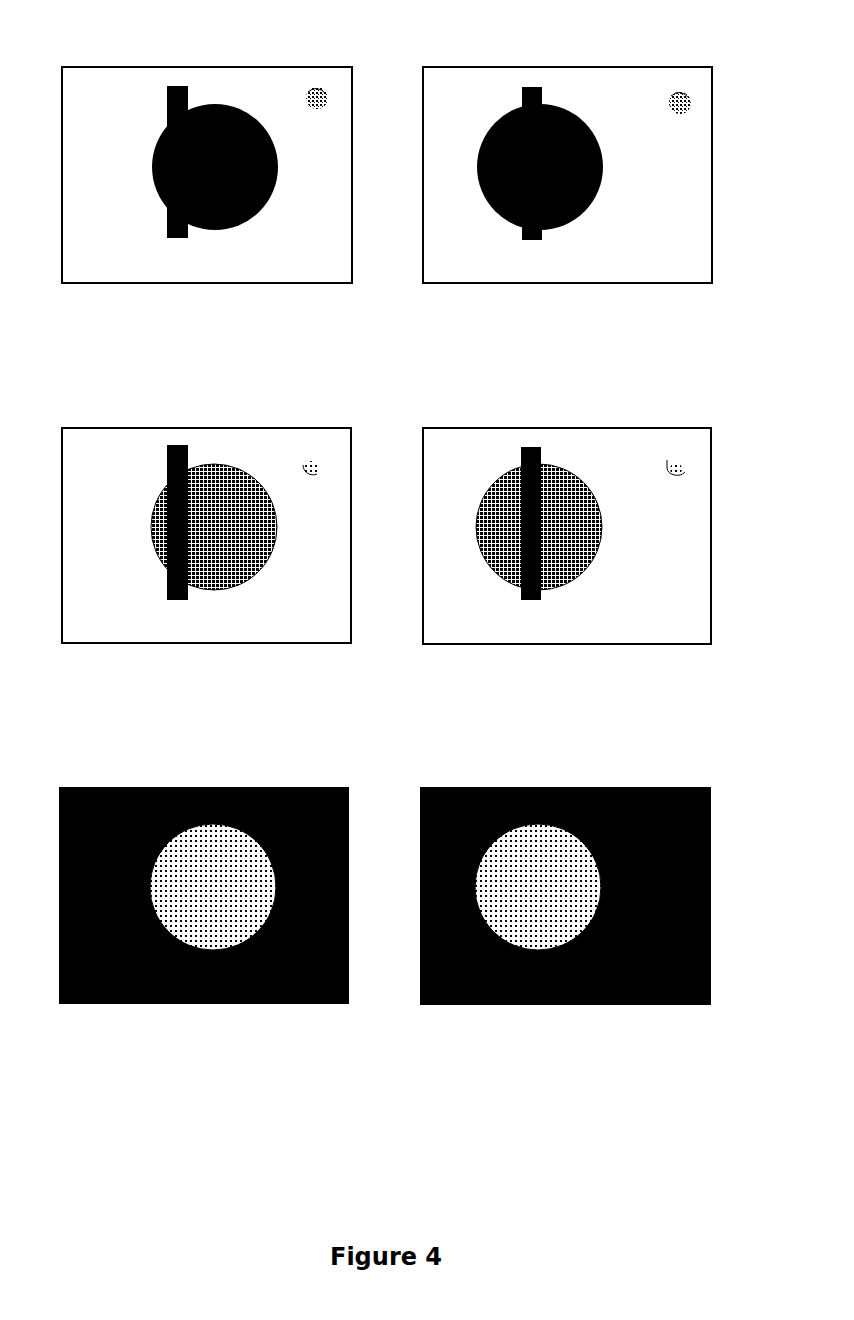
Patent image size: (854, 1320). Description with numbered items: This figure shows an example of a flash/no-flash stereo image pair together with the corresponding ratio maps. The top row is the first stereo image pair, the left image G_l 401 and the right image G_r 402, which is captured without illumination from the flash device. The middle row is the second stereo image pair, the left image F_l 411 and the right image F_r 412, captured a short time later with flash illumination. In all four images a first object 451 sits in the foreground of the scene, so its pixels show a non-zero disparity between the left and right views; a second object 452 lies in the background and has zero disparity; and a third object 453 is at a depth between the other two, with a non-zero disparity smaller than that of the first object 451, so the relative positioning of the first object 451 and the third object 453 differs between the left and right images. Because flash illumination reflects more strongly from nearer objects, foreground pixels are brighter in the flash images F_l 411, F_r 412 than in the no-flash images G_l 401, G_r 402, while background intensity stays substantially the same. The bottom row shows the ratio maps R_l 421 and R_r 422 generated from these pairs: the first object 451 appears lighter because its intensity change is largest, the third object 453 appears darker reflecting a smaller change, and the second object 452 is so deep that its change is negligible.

The left no-flash stereo image G_l 401 is at (207, 178).
The right no-flash stereo image G_r 402 is at (460, 283).
The left flash stereo image F_l 411 is at (132, 643).
The right flash stereo image F_r 412 is at (460, 644).
The left ratio map R_l 421 is at (132, 1004).
The right ratio map R_r 422 is at (457, 1005).
The first object 451 is at (221, 103).
The second object 452 is at (322, 87).
The third object 453 is at (173, 85).